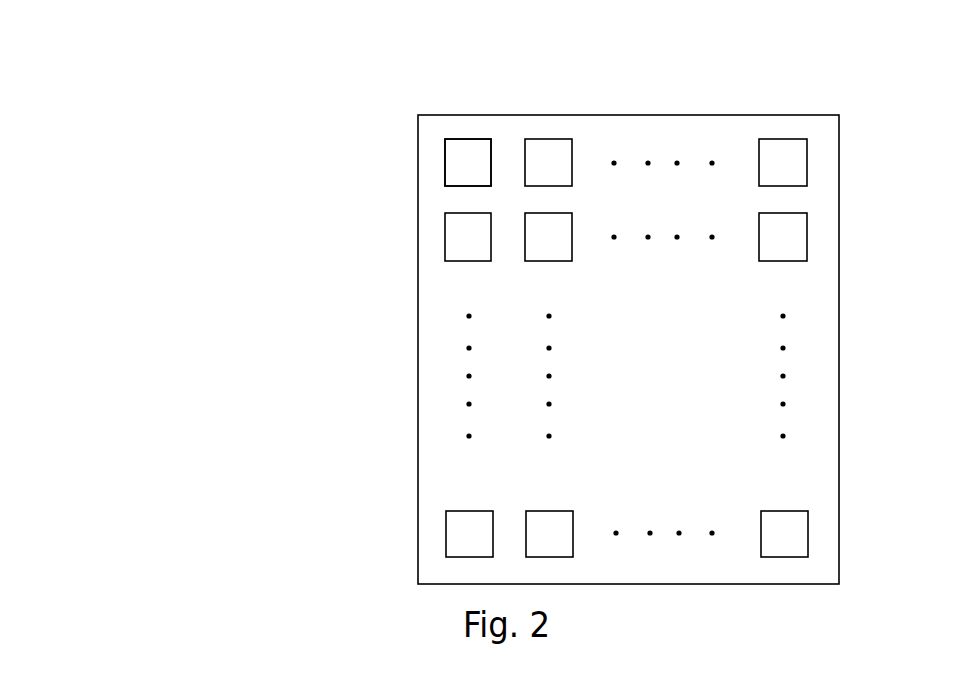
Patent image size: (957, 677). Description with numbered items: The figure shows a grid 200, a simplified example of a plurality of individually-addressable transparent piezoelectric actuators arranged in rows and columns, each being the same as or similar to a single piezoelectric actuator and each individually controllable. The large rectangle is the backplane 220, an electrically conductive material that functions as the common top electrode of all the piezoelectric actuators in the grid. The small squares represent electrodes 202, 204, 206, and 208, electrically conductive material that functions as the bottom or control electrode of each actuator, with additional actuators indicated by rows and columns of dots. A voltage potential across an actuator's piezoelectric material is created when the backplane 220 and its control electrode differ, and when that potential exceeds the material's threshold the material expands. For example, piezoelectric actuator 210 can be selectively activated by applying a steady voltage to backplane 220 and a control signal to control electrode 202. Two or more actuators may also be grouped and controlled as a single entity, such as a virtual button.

The grid 200 is at (172, 70).
The electrode 202 is at (468, 162).
The electrode 204 is at (548, 162).
The electrode 206 is at (468, 237).
The electrode 208 is at (548, 237).
The piezoelectric actuator 210 is at (449, 152).
The backplane 220 is at (408, 316).